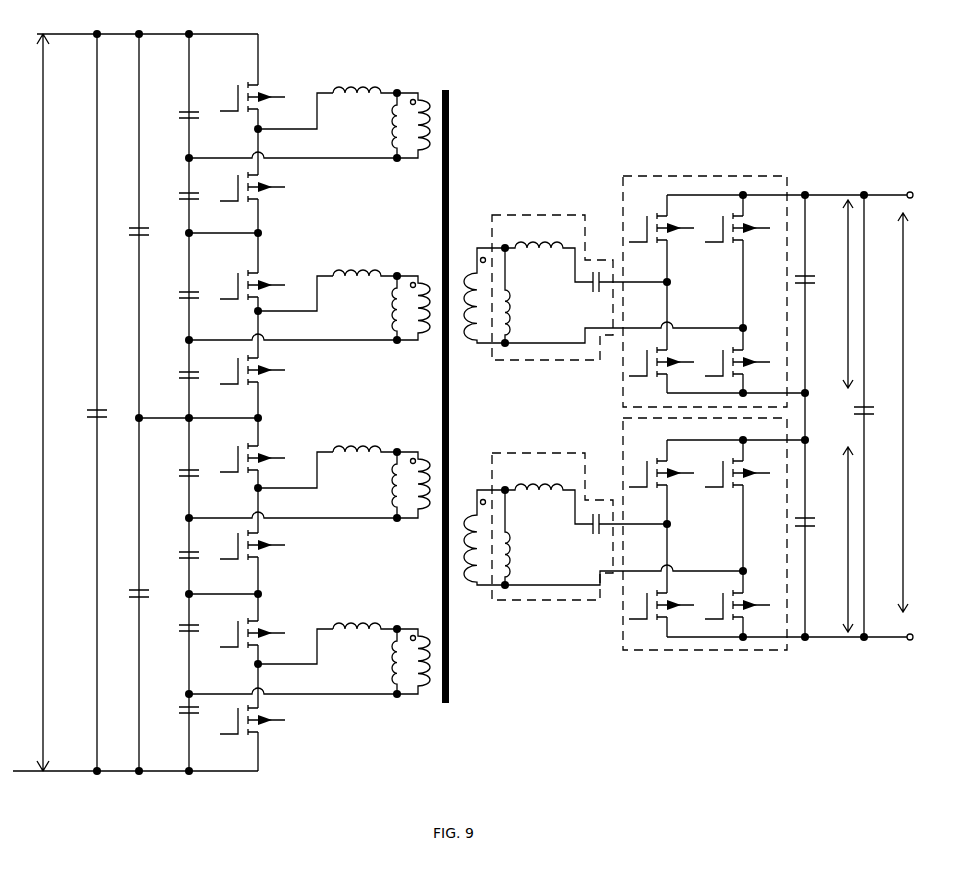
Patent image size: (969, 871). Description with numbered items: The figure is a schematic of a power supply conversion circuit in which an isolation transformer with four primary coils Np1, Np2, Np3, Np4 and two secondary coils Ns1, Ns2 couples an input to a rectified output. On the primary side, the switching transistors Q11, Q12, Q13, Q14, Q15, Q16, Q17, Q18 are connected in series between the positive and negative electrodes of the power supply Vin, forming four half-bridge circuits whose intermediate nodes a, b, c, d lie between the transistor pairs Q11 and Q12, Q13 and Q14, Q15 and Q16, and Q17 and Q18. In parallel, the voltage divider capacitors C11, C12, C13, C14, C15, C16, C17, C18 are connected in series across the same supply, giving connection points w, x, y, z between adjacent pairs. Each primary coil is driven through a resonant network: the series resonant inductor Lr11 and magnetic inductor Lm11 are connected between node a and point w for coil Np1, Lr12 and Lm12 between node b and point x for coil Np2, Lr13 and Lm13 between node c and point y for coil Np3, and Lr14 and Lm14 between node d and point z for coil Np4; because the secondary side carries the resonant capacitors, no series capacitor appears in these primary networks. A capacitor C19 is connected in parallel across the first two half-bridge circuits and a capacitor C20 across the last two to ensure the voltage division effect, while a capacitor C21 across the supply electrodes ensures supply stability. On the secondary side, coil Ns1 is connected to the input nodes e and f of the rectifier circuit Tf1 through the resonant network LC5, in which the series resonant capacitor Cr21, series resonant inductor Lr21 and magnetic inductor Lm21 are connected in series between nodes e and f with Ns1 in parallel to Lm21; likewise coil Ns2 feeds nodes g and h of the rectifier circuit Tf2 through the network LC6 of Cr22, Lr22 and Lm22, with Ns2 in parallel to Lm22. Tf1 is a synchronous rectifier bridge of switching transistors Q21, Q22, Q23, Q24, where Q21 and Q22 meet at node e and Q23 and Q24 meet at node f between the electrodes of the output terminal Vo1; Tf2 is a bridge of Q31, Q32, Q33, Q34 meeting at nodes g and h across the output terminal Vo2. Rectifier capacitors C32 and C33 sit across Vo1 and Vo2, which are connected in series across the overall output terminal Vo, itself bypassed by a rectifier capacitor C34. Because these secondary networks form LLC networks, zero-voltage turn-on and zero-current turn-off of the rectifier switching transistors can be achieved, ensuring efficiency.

The power supply Vin is at (135, 402).
The capacitor C21 is at (83, 402).
The capacitor C19 is at (127, 226).
The capacitor C20 is at (127, 594).
The capacitor C11 is at (176, 125).
The capacitor C12 is at (176, 207).
The capacitor C13 is at (176, 306).
The capacitor C14 is at (176, 386).
The capacitor C15 is at (176, 484).
The capacitor C16 is at (176, 566).
The capacitor C17 is at (176, 639).
The capacitor C18 is at (176, 718).
The switching transistor Q11 is at (244, 95).
The switching transistor Q12 is at (244, 185).
The switching transistor Q13 is at (244, 283).
The switching transistor Q14 is at (244, 368).
The switching transistor Q15 is at (244, 456).
The switching transistor Q16 is at (244, 543).
The switching transistor Q17 is at (244, 631).
The switching transistor Q18 is at (244, 718).
The intermediate node a is at (283, 115).
The intermediate node b is at (283, 297).
The intermediate node c is at (283, 473).
The intermediate node d is at (283, 650).
The connection point w is at (282, 158).
The connection point x is at (283, 340).
The connection point y is at (283, 518).
The connection point z is at (283, 694).
The series resonant inductor Lr11 is at (365, 81).
The series resonant inductor Lr12 is at (365, 264).
The series resonant inductor Lr13 is at (365, 440).
The series resonant inductor Lr14 is at (365, 617).
The magnetic inductor Lm11 is at (370, 125).
The magnetic inductor Lm12 is at (370, 308).
The magnetic inductor Lm13 is at (370, 485).
The magnetic inductor Lm14 is at (370, 661).
The primary coil Np1 is at (415, 137).
The primary coil Np2 is at (415, 320).
The primary coil Np3 is at (415, 496).
The primary coil Np4 is at (415, 673).
The secondary coil Ns1 is at (483, 309).
The secondary coil Ns2 is at (483, 550).
The resonant network LC5 is at (552, 270).
The resonant network LC6 is at (552, 509).
The series resonant inductor Lr21 is at (549, 253).
The series resonant inductor Lr22 is at (549, 494).
The magnetic inductor Lm21 is at (530, 295).
The magnetic inductor Lm22 is at (530, 537).
The series resonant capacitor Cr21 is at (591, 295).
The series resonant capacitor Cr22 is at (591, 535).
The rectifier circuit Tf1 is at (714, 278).
The rectifier circuit Tf2 is at (714, 552).
The switching transistor Q21 is at (665, 238).
The switching transistor Q22 is at (665, 358).
The switching transistor Q23 is at (742, 238).
The switching transistor Q24 is at (742, 357).
The switching transistor Q31 is at (665, 484).
The switching transistor Q32 is at (665, 602).
The switching transistor Q33 is at (742, 480).
The switching transistor Q34 is at (742, 601).
The node e is at (673, 286).
The node f is at (748, 322).
The node g is at (673, 525).
The node h is at (749, 564).
The rectifier capacitor C32 is at (817, 294).
The rectifier capacitor C33 is at (817, 515).
The rectifier capacitor C34 is at (875, 416).
The output terminal Vo1 is at (833, 294).
The output terminal Vo2 is at (833, 539).
The output terminal Vo is at (911, 412).